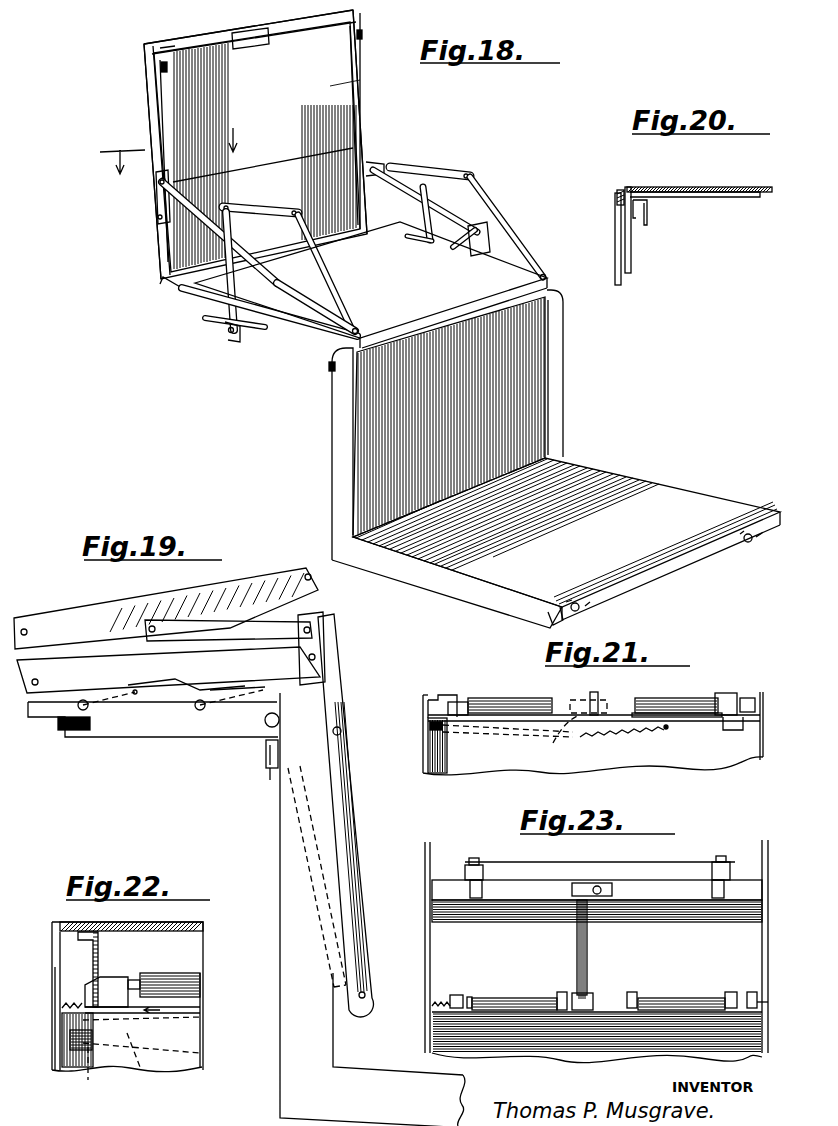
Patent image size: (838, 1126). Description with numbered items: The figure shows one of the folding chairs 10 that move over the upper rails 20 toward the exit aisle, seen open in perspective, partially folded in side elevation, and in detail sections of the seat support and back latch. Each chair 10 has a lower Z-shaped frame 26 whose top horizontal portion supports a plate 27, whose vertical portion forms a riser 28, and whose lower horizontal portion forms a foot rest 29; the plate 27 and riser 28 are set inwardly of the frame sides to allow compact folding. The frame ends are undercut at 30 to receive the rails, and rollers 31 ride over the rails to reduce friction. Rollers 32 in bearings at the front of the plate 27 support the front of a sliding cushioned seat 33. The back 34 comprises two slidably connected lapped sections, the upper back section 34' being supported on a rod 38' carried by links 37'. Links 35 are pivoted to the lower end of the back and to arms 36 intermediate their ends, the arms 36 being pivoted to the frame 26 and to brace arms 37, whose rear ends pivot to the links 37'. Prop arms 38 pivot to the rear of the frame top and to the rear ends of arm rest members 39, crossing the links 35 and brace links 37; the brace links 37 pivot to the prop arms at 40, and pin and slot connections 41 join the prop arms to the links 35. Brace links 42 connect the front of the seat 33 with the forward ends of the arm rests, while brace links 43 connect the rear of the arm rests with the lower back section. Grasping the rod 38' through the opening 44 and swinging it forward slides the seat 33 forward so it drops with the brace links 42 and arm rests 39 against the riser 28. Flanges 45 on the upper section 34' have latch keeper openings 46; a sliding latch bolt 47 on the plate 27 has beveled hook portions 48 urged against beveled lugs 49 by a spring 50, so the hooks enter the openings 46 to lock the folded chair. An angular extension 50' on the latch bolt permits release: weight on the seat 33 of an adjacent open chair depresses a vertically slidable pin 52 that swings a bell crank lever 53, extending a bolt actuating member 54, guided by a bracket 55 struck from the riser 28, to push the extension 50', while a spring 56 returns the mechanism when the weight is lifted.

In FIG. 18, the folding chair 10 is at (438, 159).
In FIG. 18, the upper rail 20 is at (224, 149).
In FIG. 18, the Z-shape frame section 26 is at (326, 427).
In FIG. 19, the Z-shape frame section 26 is at (294, 1096).
In FIG. 21, the Z-shape frame section 26 is at (425, 775).
In FIG. 23, the Z-shape frame section 26 is at (423, 961).
In FIG. 23, the plate 27 is at (597, 905).
In FIG. 18, the riser 28 is at (540, 385).
In FIG. 21, the riser 28 is at (594, 734).
In FIG. 18, the foot rest 29 is at (566, 539).
In FIG. 19, the foot rest 29 is at (400, 1068).
In FIG. 23, the foot rest 29 is at (600, 1045).
In FIG. 18, the undercut 30 is at (230, 336).
In FIG. 18, the roller 31 is at (583, 610).
In FIG. 19, the roller 31 is at (60, 730).
In FIG. 23, the roller 31 is at (485, 868).
In FIG. 19, the roller 32 is at (268, 725).
In FIG. 21, the roller 32 is at (510, 698).
In FIG. 22, the roller 32 is at (178, 974).
In FIG. 23, the roller 32 is at (510, 998).
In FIG. 18, the sliding cushioned seat 33 is at (495, 283).
In FIG. 19, the sliding cushioned seat 33 is at (342, 845).
In FIG. 18, the back 34 is at (255, 144).
In FIG. 20, the back 34 is at (699, 179).
In FIG. 18, the upper back section 34' is at (330, 156).
In FIG. 18, the link 35 is at (206, 292).
In FIG. 19, the link 35 is at (186, 692).
In FIG. 18, the arm 36 is at (264, 348).
In FIG. 19, the arm 36 is at (268, 690).
In FIG. 18, the brace arm 37 is at (293, 227).
In FIG. 19, the brace arm 37 is at (166, 608).
In FIG. 20, the brace arm 37 is at (600, 239).
In FIG. 18, the link 37' is at (262, 144).
In FIG. 19, the link 37' is at (207, 589).
In FIG. 20, the link 37' is at (614, 182).
In FIG. 18, the prop arm 38 is at (286, 246).
In FIG. 19, the prop arm 38 is at (181, 677).
In FIG. 18, the rod 38' is at (174, 29).
In FIG. 18, the arm rest member 39 is at (264, 205).
In FIG. 19, the arm rest member 39 is at (325, 650).
In FIG. 18, the pivot 40 is at (178, 248).
In FIG. 19, the pivot 40 is at (237, 677).
In FIG. 18, the pin and slot connection 41 is at (222, 313).
In FIG. 19, the pin and slot connection 41 is at (135, 695).
In FIG. 18, the brace link 42 is at (310, 335).
In FIG. 19, the brace link 42 is at (352, 790).
In FIG. 18, the brace link 43 is at (158, 208).
In FIG. 19, the brace link 43 is at (205, 620).
In FIG. 20, the brace link 43 is at (628, 255).
In FIG. 18, the opening 44 is at (248, 30).
In FIG. 18, the flange 45 is at (165, 87).
In FIG. 20, the flange 45 is at (650, 218).
In FIG. 22, the flange 45 is at (100, 950).
In FIG. 18, the latch keeper opening 46 is at (160, 66).
In FIG. 19, the latch keeper opening 46 is at (305, 625).
In FIG. 22, the latch keeper opening 46 is at (100, 986).
In FIG. 21, the sliding latch bolt 47 is at (680, 713).
In FIG. 22, the sliding latch bolt 47 is at (198, 1010).
In FIG. 21, the beveled face hook portion 48 is at (444, 695).
In FIG. 23, the beveled face hook portion 48 is at (455, 994).
In FIG. 21, the beveled lug 49 is at (458, 702).
In FIG. 22, the beveled lug 49 is at (134, 982).
In FIG. 23, the beveled lug 49 is at (752, 990).
In FIG. 21, the spring 50 is at (413, 693).
In FIG. 22, the spring 50 is at (57, 1027).
In FIG. 21, the angular extension 50' is at (743, 726).
In FIG. 23, the angular extension 50' is at (783, 989).
In FIG. 21, the vertically slidable pin 52 is at (594, 690).
In FIG. 23, the vertically slidable pin 52 is at (598, 885).
In FIG. 21, the bell crank lever 53 is at (555, 744).
In FIG. 23, the bell crank lever 53 is at (588, 993).
In FIG. 18, the bolt actuating member 54 is at (325, 377).
In FIG. 19, the bolt actuating member 54 is at (272, 780).
In FIG. 21, the bolt actuating member 54 is at (492, 740).
In FIG. 22, the bolt actuating member 54 is at (140, 1068).
In FIG. 19, the bracket 55 is at (266, 750).
In FIG. 21, the bracket 55 is at (432, 738).
In FIG. 22, the bracket 55 is at (91, 1071).
In FIG. 21, the spring 56 is at (622, 733).